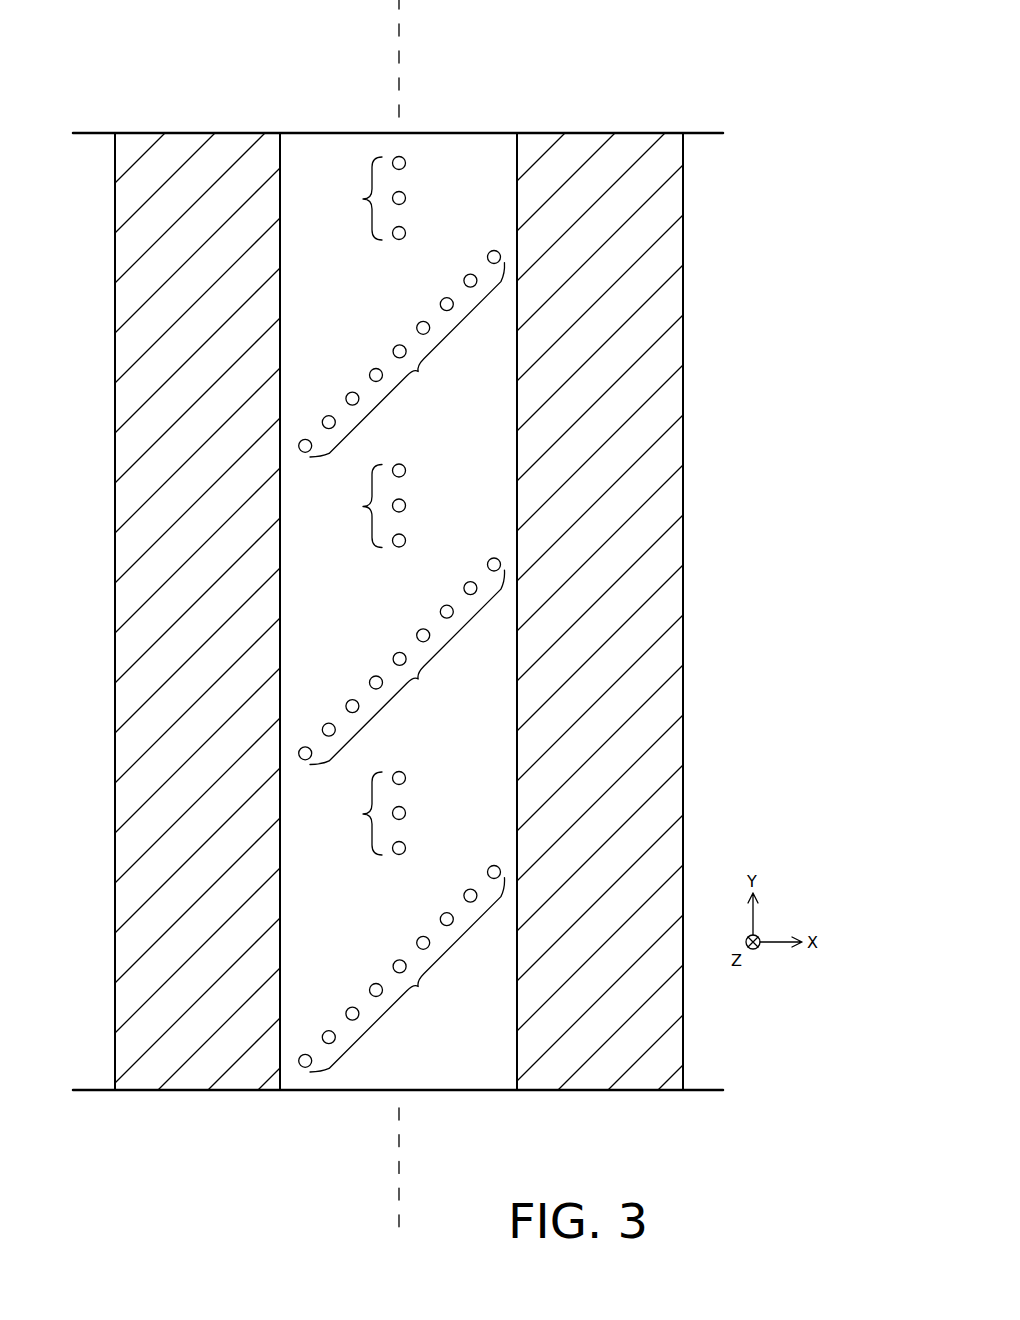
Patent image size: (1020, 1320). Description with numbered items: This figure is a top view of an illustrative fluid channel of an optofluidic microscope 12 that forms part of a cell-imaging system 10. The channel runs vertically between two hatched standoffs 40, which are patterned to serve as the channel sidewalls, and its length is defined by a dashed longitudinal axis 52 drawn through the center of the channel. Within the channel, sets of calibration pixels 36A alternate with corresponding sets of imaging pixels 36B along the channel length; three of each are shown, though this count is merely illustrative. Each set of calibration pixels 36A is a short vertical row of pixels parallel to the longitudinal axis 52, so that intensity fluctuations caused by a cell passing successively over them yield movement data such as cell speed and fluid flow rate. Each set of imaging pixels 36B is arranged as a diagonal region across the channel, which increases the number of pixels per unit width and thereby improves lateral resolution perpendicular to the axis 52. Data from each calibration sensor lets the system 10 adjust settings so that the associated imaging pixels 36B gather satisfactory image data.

The system 10 is at (364, 148).
The optofluidic microscope 12 is at (643, 48).
The calibration pixels 36A is at (363, 199).
The imaging pixels 36B is at (418, 371).
The standoffs 40 is at (187, 148).
The longitudinal axis 52 is at (399, 33).